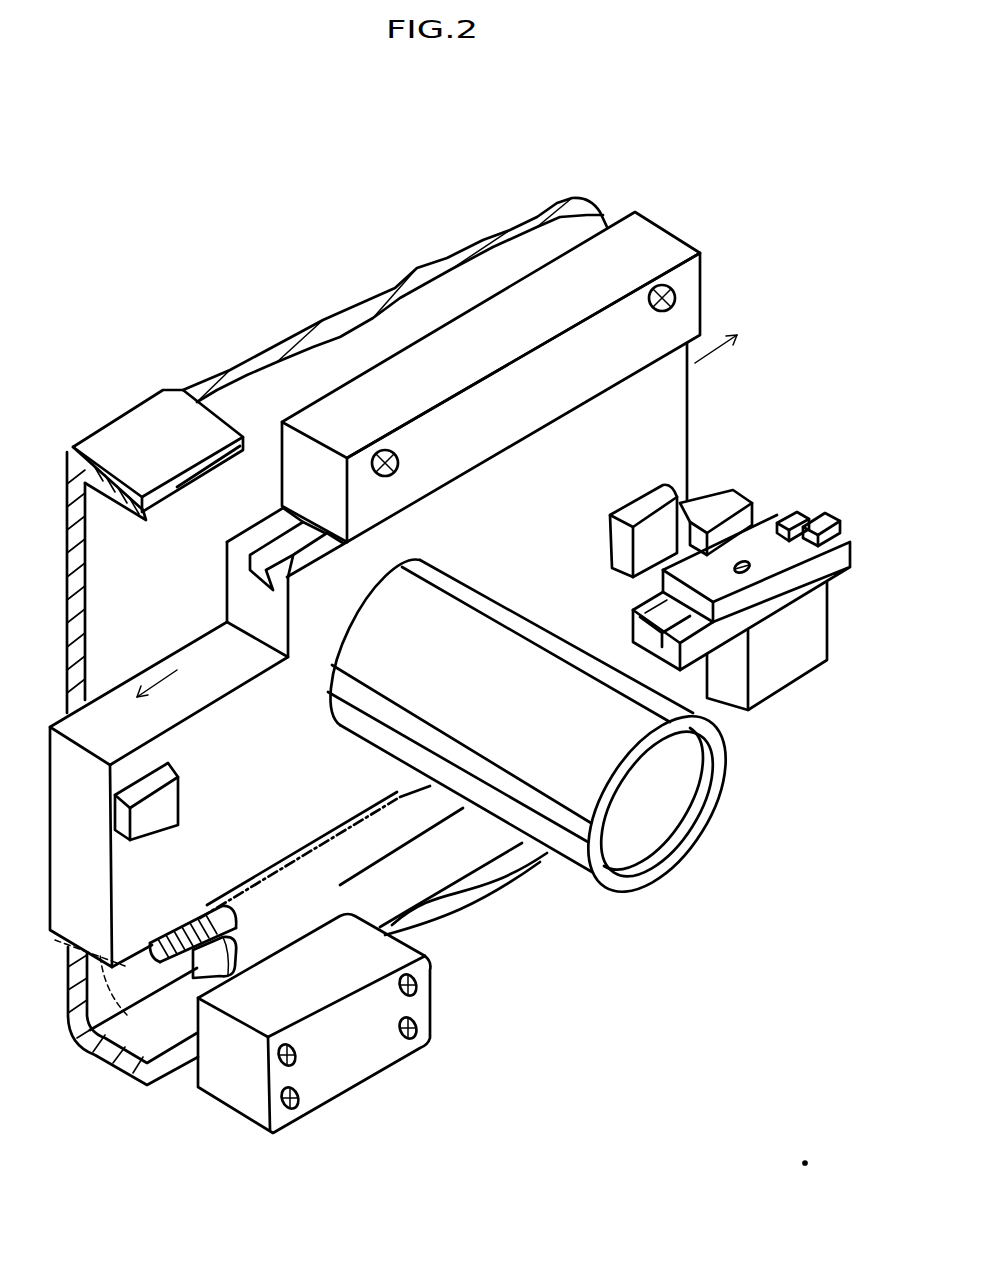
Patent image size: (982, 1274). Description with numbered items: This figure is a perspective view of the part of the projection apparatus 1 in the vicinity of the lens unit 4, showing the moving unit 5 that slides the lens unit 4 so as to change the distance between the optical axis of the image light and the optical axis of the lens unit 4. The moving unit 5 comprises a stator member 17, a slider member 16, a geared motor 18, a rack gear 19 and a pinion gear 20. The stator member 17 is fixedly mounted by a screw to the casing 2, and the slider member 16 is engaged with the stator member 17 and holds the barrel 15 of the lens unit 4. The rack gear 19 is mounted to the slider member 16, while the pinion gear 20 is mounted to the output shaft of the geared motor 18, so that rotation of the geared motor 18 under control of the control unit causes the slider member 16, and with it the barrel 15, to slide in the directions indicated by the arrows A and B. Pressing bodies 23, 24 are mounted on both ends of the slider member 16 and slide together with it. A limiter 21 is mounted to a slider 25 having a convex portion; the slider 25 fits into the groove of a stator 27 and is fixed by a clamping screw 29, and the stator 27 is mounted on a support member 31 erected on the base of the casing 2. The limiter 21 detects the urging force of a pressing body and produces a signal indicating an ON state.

The projection apparatus 1 is at (377, 190).
The casing 2 is at (170, 451).
The lens unit 4 is at (648, 820).
The moving unit 5 is at (497, 938).
The barrel 15 is at (476, 696).
The slider member 16 is at (508, 519).
The stator member 17 is at (446, 361).
The geared motor 18 is at (296, 981).
The rack gear 19 is at (127, 1020).
The pinion gear 20 is at (172, 935).
The limiter 21 is at (710, 517).
The pressing body 23 is at (643, 510).
The pressing body 24 is at (150, 767).
The slider 25 is at (792, 510).
The stator 27 is at (820, 530).
The clamping screw 29 is at (738, 563).
The support member 31 is at (771, 661).